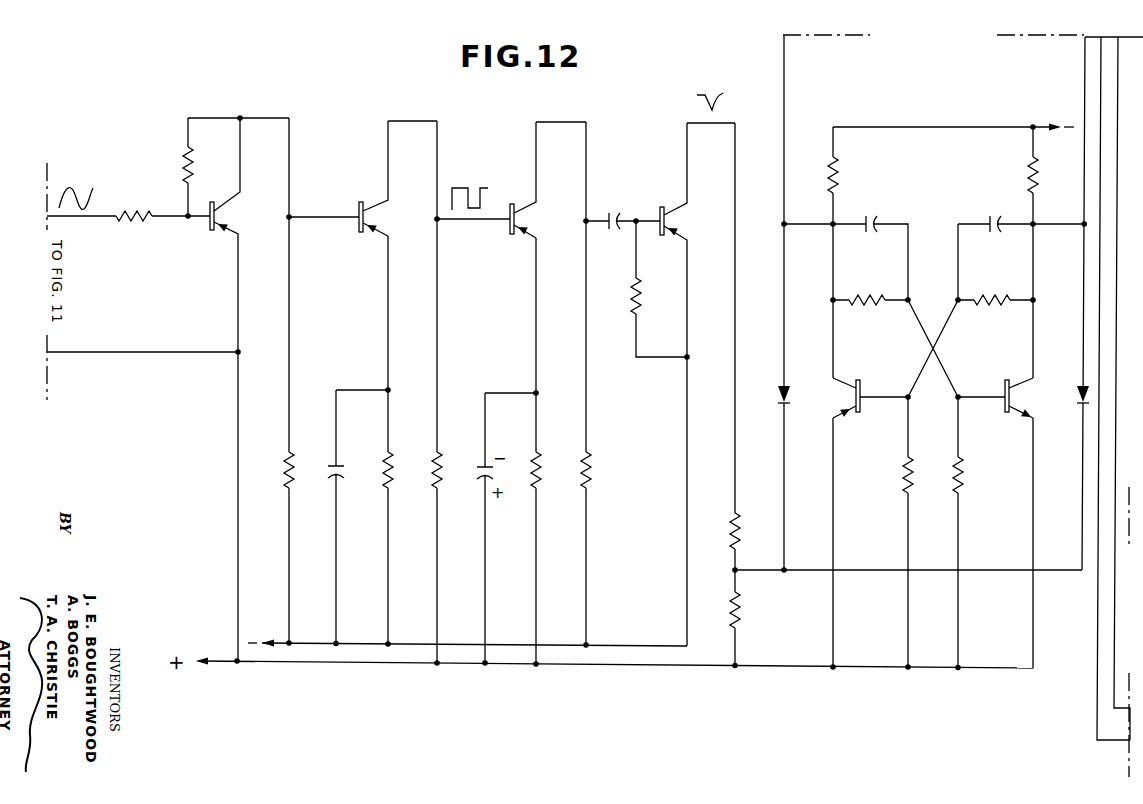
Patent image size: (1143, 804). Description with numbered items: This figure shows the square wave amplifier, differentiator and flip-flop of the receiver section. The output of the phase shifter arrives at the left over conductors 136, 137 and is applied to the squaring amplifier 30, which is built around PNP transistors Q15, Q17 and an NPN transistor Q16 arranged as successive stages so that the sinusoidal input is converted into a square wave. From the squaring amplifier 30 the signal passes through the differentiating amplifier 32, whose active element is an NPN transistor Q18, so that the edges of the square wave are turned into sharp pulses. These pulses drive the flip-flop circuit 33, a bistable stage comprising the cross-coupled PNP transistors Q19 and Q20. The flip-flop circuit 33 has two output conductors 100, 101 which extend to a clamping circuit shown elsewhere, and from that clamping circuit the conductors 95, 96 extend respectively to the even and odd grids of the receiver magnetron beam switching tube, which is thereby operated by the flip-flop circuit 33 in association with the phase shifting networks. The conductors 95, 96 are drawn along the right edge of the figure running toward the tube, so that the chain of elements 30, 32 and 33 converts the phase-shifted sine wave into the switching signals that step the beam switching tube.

The squaring amplifier 30 is at (382, 116).
The differentiating amplifier 32 is at (661, 120).
The flip-flop circuit 33 is at (947, 108).
The conductor 95 is at (1118, 52).
The conductor 96 is at (1101, 80).
The output conductor 100 is at (786, 57).
The output conductor 101 is at (1085, 106).
The conductor 136 is at (77, 218).
The conductor 137 is at (80, 354).
The PNP transistor Q15 is at (219, 216).
The NPN transistor Q16 is at (368, 217).
The PNP transistor Q17 is at (519, 219).
The NPN transistor Q18 is at (669, 221).
The PNP transistor Q19 is at (862, 392).
The PNP transistor Q20 is at (1004, 392).